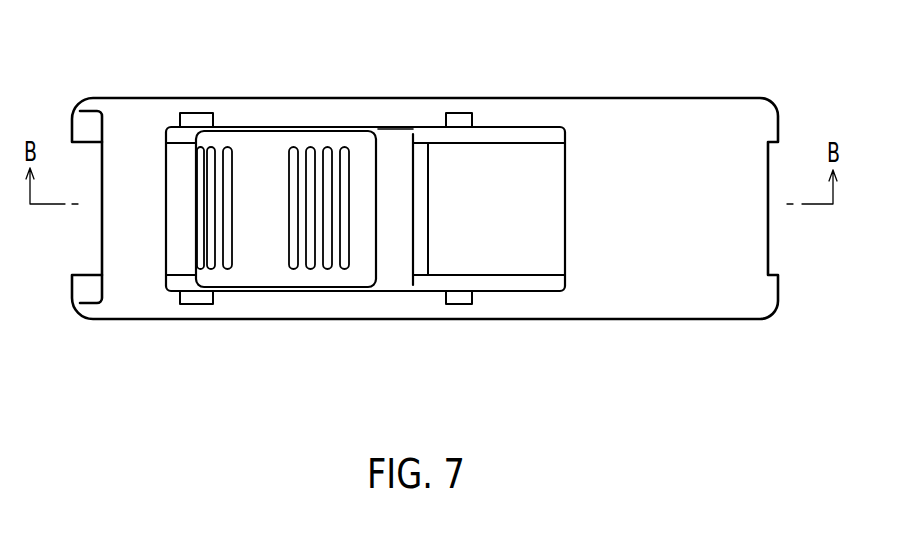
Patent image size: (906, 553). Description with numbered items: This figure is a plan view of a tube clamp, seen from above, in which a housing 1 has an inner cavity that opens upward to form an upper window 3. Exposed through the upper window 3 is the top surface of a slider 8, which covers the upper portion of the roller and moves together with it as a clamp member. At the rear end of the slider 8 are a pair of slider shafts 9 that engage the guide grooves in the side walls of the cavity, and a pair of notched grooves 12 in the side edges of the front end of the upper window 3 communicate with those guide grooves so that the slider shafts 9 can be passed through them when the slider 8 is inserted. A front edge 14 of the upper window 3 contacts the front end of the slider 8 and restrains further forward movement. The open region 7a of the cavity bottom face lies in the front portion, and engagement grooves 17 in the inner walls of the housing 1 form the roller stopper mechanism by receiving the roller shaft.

The housing 1 is at (602, 320).
The upper window 3 is at (567, 210).
The open region 7a is at (522, 177).
The slider 8 is at (293, 142).
The slider shafts 9 is at (400, 128).
The notched grooves 12 is at (182, 113).
The front edge 14 is at (165, 203).
The engagement grooves 17 is at (459, 113).